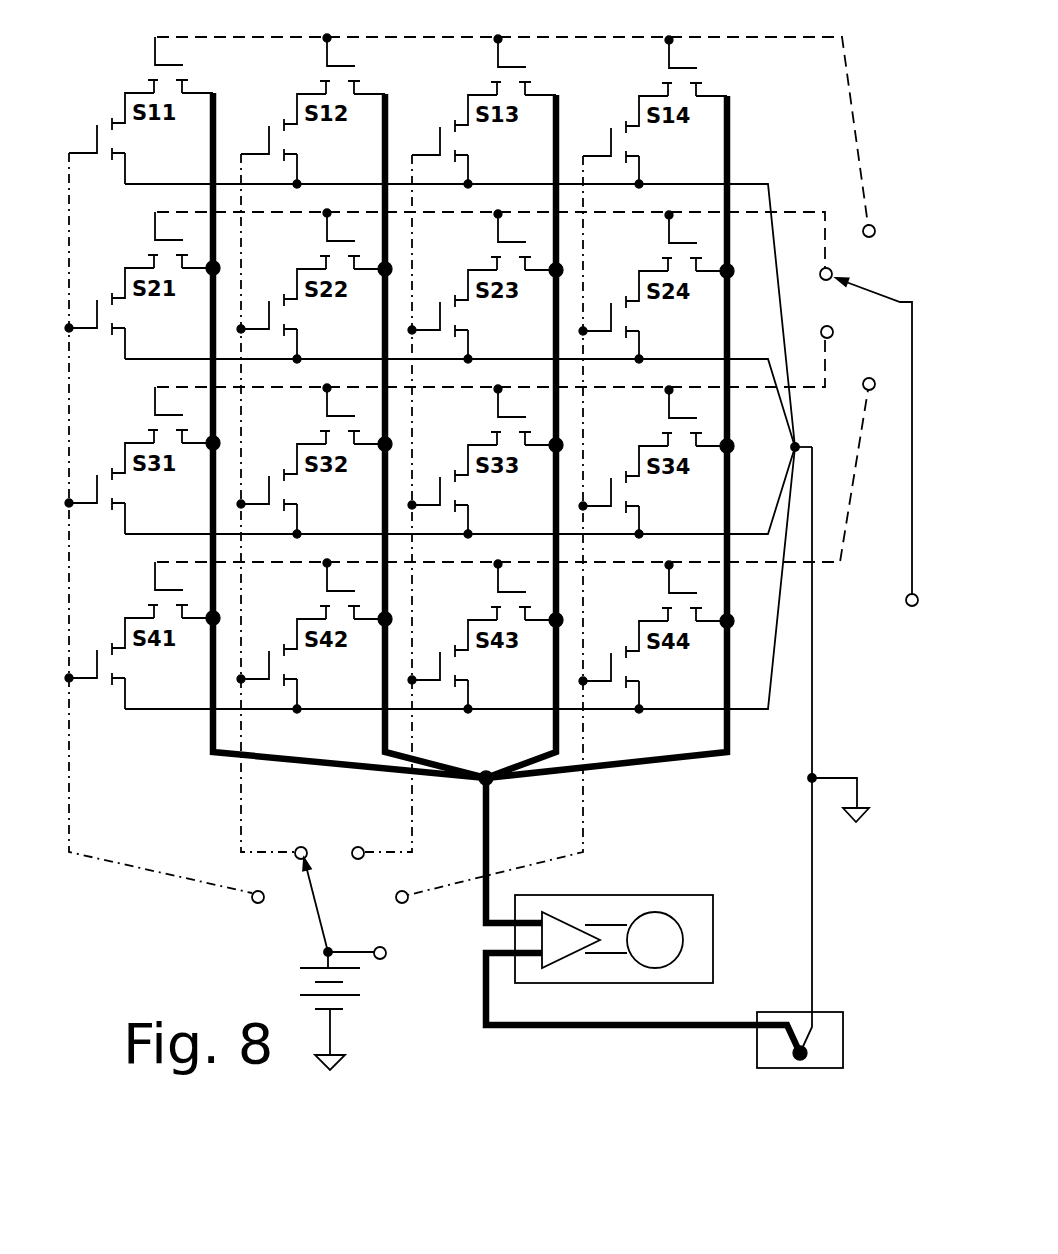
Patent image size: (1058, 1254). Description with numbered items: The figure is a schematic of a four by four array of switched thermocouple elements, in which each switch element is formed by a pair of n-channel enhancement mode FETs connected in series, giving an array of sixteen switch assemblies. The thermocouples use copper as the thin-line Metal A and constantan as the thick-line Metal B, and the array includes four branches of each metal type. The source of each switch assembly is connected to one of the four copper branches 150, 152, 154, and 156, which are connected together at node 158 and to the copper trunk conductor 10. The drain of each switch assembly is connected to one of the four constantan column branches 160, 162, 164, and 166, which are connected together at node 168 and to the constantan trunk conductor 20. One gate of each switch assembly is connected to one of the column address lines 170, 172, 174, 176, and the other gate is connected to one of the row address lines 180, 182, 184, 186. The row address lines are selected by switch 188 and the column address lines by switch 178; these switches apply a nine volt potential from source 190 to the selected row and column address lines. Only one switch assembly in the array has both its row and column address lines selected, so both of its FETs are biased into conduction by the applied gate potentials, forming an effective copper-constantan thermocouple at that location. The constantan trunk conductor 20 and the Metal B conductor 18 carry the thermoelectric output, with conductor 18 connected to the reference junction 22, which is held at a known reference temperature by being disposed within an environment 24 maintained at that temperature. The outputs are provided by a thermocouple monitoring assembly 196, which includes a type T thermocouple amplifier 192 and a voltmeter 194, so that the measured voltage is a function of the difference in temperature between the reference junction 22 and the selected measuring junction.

The copper trunk conductor 10 is at (817, 897).
The Metal B conductor 18 is at (543, 1030).
The constantan trunk conductor 20 is at (490, 835).
The reference junction 22 is at (787, 1050).
The environment 24 is at (828, 1020).
The copper branch 150 is at (138, 188).
The copper branch 152 is at (138, 363).
The copper branch 154 is at (138, 538).
The copper branch 156 is at (145, 713).
The node 158 is at (788, 450).
The constantan column branch 160 is at (211, 736).
The constantan column branch 162 is at (382, 752).
The constantan column branch 164 is at (553, 752).
The constantan column branch 166 is at (724, 752).
The node 168 is at (478, 784).
The column address line 170 is at (143, 868).
The column address line 172 is at (247, 830).
The column address line 174 is at (412, 837).
The column address line 176 is at (585, 830).
The column address switch 178 is at (307, 926).
The row address line 180 is at (775, 43).
The row address line 182 is at (783, 213).
The row address line 184 is at (808, 395).
The row address line 186 is at (827, 568).
The row address switch 188 is at (883, 292).
The source 190 is at (357, 985).
The thermocouple amplifier 192 is at (555, 933).
The voltmeter 194 is at (665, 923).
The thermocouple monitoring assembly 196 is at (702, 938).